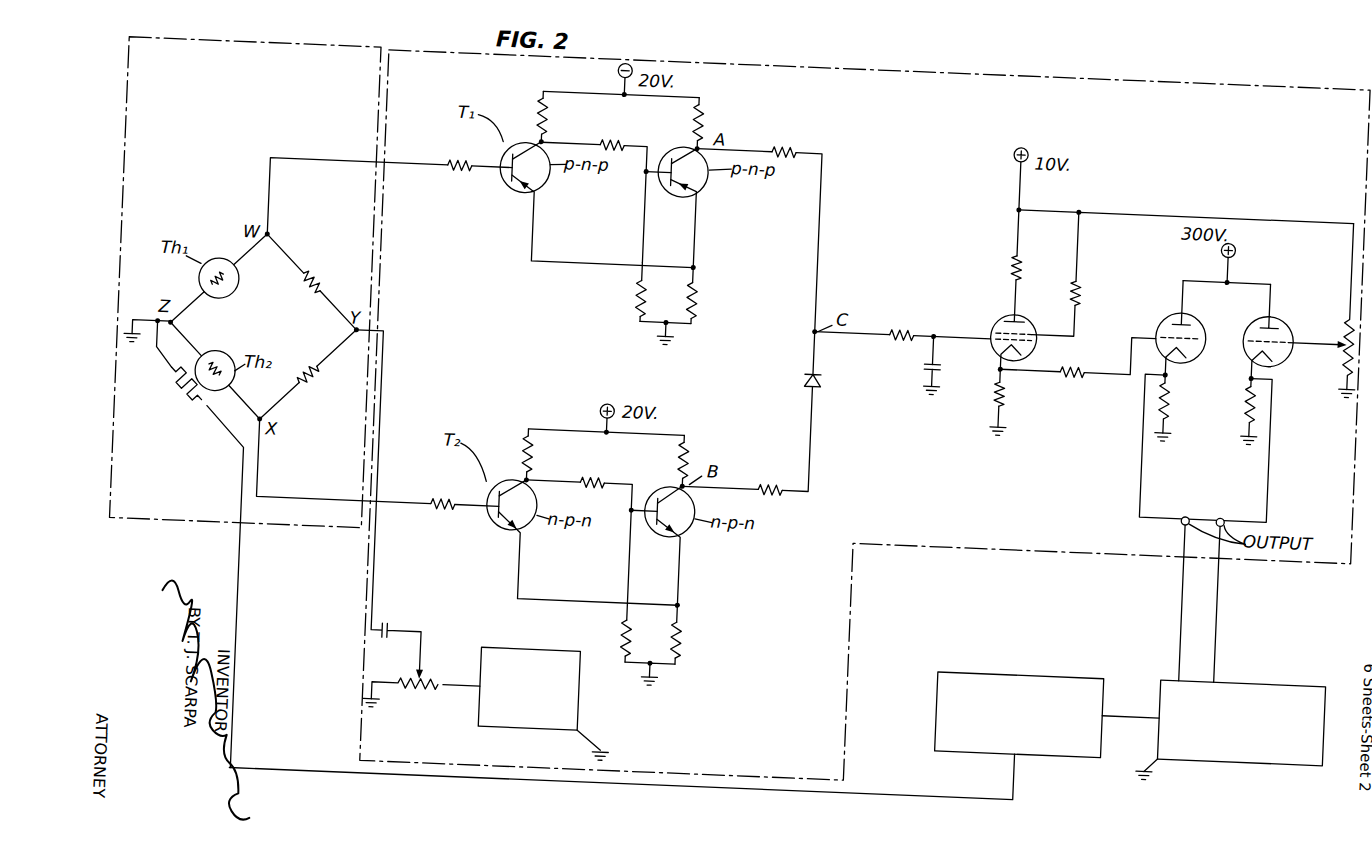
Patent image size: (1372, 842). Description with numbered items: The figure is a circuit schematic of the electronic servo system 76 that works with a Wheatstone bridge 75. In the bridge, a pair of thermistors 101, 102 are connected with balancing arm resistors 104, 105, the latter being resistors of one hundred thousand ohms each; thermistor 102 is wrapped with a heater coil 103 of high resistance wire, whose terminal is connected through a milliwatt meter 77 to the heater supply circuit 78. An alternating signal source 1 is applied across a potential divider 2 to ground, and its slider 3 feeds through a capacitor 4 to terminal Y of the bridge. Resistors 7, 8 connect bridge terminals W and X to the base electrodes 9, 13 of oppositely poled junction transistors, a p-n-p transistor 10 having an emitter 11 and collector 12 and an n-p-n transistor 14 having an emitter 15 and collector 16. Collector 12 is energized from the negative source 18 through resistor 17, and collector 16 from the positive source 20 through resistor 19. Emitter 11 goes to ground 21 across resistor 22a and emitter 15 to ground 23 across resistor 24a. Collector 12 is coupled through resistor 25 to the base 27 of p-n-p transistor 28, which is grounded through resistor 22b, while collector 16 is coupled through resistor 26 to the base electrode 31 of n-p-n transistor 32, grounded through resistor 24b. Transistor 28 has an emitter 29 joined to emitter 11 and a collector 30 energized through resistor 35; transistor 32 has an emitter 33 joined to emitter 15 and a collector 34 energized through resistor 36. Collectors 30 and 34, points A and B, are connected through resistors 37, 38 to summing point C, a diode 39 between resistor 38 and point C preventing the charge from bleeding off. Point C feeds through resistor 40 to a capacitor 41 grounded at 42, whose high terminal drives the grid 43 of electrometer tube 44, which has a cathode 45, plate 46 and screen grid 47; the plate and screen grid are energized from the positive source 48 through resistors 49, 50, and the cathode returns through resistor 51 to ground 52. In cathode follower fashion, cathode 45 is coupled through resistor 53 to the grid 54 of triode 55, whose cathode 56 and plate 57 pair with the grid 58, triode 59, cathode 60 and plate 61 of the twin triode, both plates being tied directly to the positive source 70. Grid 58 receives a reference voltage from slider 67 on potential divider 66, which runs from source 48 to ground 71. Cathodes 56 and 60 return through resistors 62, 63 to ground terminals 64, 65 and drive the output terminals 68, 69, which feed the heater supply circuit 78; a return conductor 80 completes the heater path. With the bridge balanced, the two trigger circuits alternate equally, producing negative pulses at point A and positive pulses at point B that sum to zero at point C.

The alternating signal source 1 is at (593, 733).
The potential divider 2 is at (430, 702).
The slider 3 is at (442, 684).
The capacitor 4 is at (398, 640).
The resistor 7 is at (450, 183).
The resistor 8 is at (437, 520).
The base electrode 9 is at (481, 178).
The p-n-p transistor 10 is at (536, 190).
The emitter 11 is at (514, 194).
The collector 12 is at (510, 153).
The base electrode 13 is at (465, 518).
The n-p-n transistor 14 is at (532, 532).
The emitter 15 is at (511, 530).
The collector 16 is at (512, 490).
The resistor 17 is at (537, 122).
The negative source 18 is at (603, 78).
The resistor 19 is at (536, 458).
The positive source 20 is at (599, 416).
The ground 21 is at (672, 340).
The resistor 22a is at (693, 300).
The resistor 22b is at (630, 300).
The ground 23 is at (670, 683).
The resistor 24a is at (691, 639).
The resistor 24b is at (630, 639).
The resistor 25 is at (615, 146).
The resistor 26 is at (598, 484).
The base 27 is at (660, 187).
The p-n-p transistor 28 is at (694, 188).
The emitter 29 is at (698, 192).
The collector 30 is at (664, 155).
The base electrode 31 is at (660, 527).
The n-p-n transistor 32 is at (696, 505).
The emitter 33 is at (690, 538).
The collector 34 is at (668, 490).
The resistor 35 is at (697, 125).
The resistor 36 is at (695, 470).
The resistor 37 is at (783, 146).
The resistor 38 is at (776, 492).
The diode 39 is at (822, 373).
The resistor 40 is at (896, 322).
The capacitor 41 is at (920, 356).
The ground 42 is at (925, 376).
The grid 43 is at (957, 326).
The electrometer tube 44 is at (1031, 336).
The cathode 45 is at (996, 357).
The plate 46 is at (1014, 305).
The screen grid 47 is at (1032, 318).
The positive source 48 is at (1003, 150).
The resistor 49 is at (1005, 256).
The resistor 50 is at (1078, 278).
The resistor 51 is at (1006, 383).
The ground 52 is at (992, 420).
The resistor 53 is at (1075, 362).
The grid 54 is at (1151, 312).
The triode 55 is at (1190, 338).
The cathode 56 is at (1167, 358).
The plate 57 is at (1182, 295).
The grid 58 is at (1203, 319).
The triode 59 is at (1248, 303).
The cathode 60 is at (1246, 359).
The plate 61 is at (1270, 296).
The resistor 62 is at (1170, 392).
The resistor 63 is at (1242, 394).
The ground terminal 64 is at (1168, 422).
The ground terminal 65 is at (1246, 422).
The potential divider 66 is at (1338, 338).
The slider 67 is at (1305, 318).
The output terminal 68 is at (1190, 496).
The output terminal 69 is at (1226, 496).
The positive source 70 is at (1229, 232).
The ground 71 is at (1333, 368).
The Wheatstone bridge 75 is at (262, 66).
The servo system 76 is at (1093, 63).
The milliwatt meter 77 is at (1038, 662).
The heater supply circuit 78 is at (1279, 661).
The return conductor 80 is at (884, 786).
The thermistor 101 is at (226, 310).
The thermistor 102 is at (222, 374).
The heater coil 103 is at (186, 419).
The balancing arm resistor 104 is at (311, 400).
The balancing arm resistor 105 is at (316, 300).